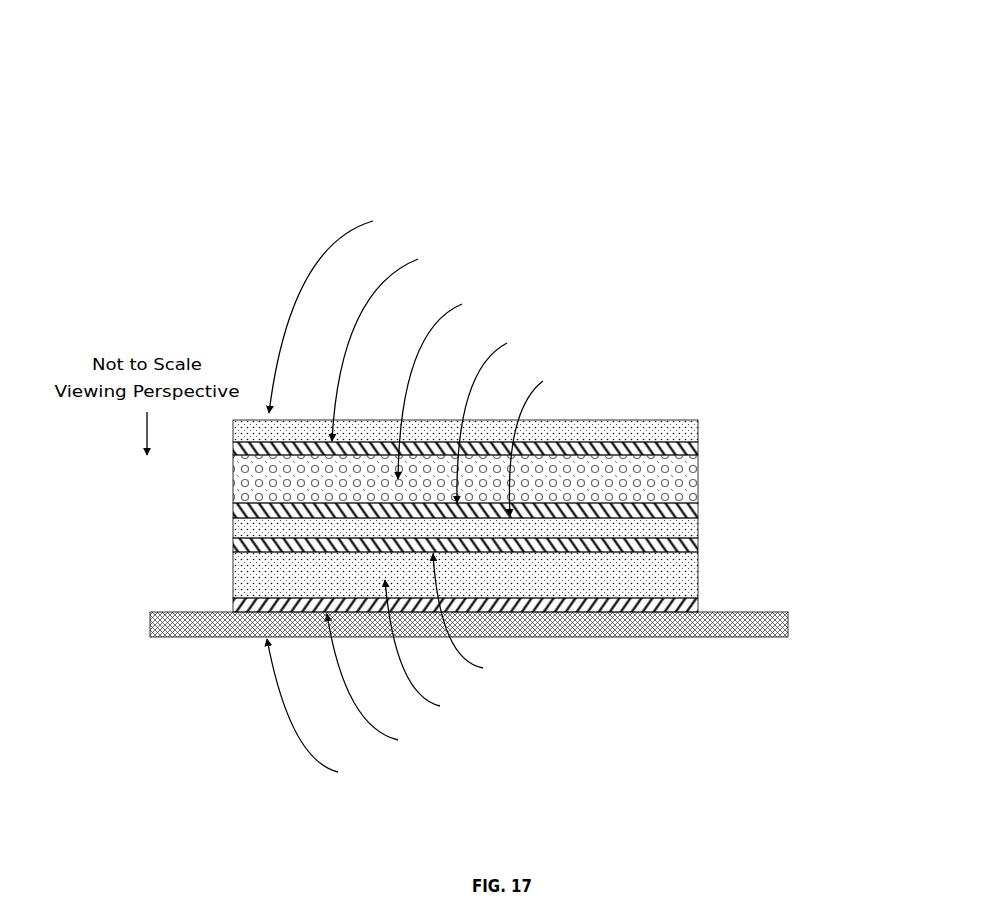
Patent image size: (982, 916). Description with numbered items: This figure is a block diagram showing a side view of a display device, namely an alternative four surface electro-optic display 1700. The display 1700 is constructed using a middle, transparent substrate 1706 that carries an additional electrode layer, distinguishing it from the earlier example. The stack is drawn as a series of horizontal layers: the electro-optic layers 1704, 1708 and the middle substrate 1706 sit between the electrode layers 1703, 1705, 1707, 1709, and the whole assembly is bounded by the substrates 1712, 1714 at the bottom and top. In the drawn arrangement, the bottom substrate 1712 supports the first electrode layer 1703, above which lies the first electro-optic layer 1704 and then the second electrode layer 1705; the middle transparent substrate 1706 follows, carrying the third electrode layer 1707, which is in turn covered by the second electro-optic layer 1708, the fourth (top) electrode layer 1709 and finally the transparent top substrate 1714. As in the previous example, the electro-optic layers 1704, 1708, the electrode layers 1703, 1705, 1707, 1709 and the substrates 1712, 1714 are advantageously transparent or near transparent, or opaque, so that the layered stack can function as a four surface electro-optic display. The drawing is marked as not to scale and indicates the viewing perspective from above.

The four surface electro-optic display 1700 is at (222, 48).
The electrode layer 1703 is at (694, 609).
The electro-optic layer 1704 is at (233, 567).
The electrode layer 1705 is at (698, 544).
The middle transparent substrate 1706 is at (233, 528).
The electrode layer 1707 is at (698, 509).
The electro-optic layer 1708 is at (233, 487).
The electrode layer 1709 is at (698, 452).
The substrate 1712 is at (202, 620).
The substrate 1714 is at (690, 433).